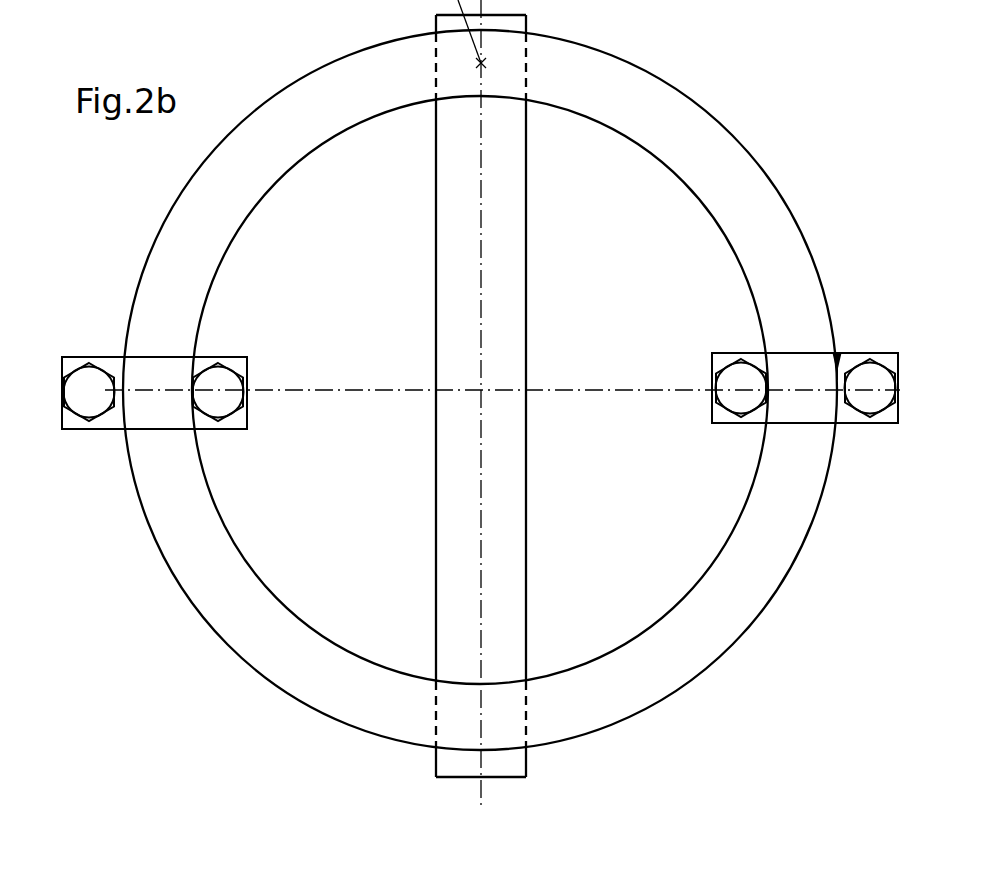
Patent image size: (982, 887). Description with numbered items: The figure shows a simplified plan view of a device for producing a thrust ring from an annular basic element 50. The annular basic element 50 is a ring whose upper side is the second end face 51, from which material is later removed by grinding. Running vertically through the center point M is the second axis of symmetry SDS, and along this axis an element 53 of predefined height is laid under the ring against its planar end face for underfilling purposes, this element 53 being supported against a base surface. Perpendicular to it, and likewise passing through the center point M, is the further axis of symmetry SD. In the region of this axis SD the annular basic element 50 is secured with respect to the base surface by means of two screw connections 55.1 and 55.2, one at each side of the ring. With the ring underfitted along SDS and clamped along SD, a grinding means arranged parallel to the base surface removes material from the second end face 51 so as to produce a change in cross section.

The annular basic element 50 is at (758, 180).
The second end face 51 is at (707, 142).
The element of predefined height 53 is at (502, 538).
The screw connection 55.1 is at (838, 352).
The screw connection 55.2 is at (108, 358).
The center point M is at (482, 390).
The further axis of symmetry SD is at (368, 393).
The second axis of symmetry SDS is at (482, 251).